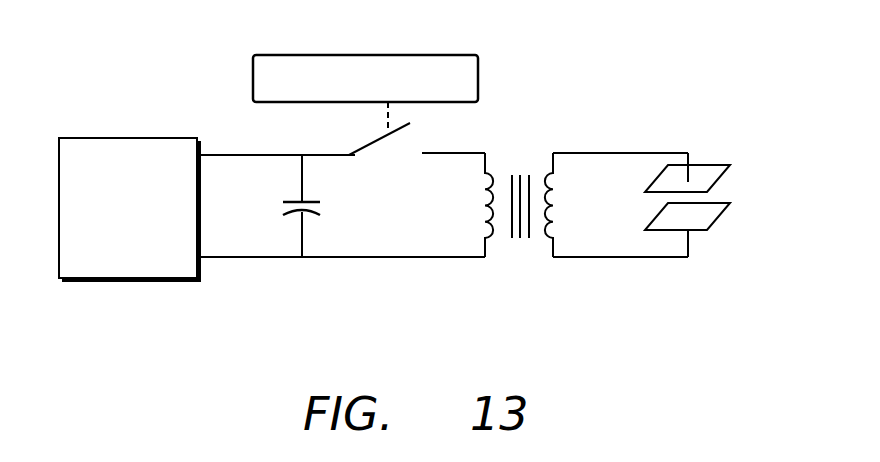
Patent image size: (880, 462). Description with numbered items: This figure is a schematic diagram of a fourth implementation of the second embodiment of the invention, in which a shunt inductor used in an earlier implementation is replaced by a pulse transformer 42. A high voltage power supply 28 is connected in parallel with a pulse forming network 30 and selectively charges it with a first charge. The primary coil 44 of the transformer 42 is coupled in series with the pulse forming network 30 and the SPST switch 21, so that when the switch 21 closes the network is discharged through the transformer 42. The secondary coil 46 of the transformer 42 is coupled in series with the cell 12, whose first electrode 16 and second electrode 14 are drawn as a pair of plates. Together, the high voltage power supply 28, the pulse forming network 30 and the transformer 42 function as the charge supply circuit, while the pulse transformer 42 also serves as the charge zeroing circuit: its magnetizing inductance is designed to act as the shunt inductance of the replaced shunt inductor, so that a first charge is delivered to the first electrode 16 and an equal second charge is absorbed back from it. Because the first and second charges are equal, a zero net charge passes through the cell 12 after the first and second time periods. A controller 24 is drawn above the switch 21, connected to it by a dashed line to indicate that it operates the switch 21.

The cell 12 is at (727, 194).
The lower electrode plate 14 is at (712, 218).
The first electrode 16 is at (707, 170).
The SPST switch 21 is at (378, 142).
The controller 24 is at (480, 82).
The high voltage power supply 28 is at (130, 209).
The pulse forming network 30 is at (320, 208).
The pulse transformer 42 is at (519, 272).
The primary coil 44 is at (485, 212).
The secondary coil 46 is at (553, 218).